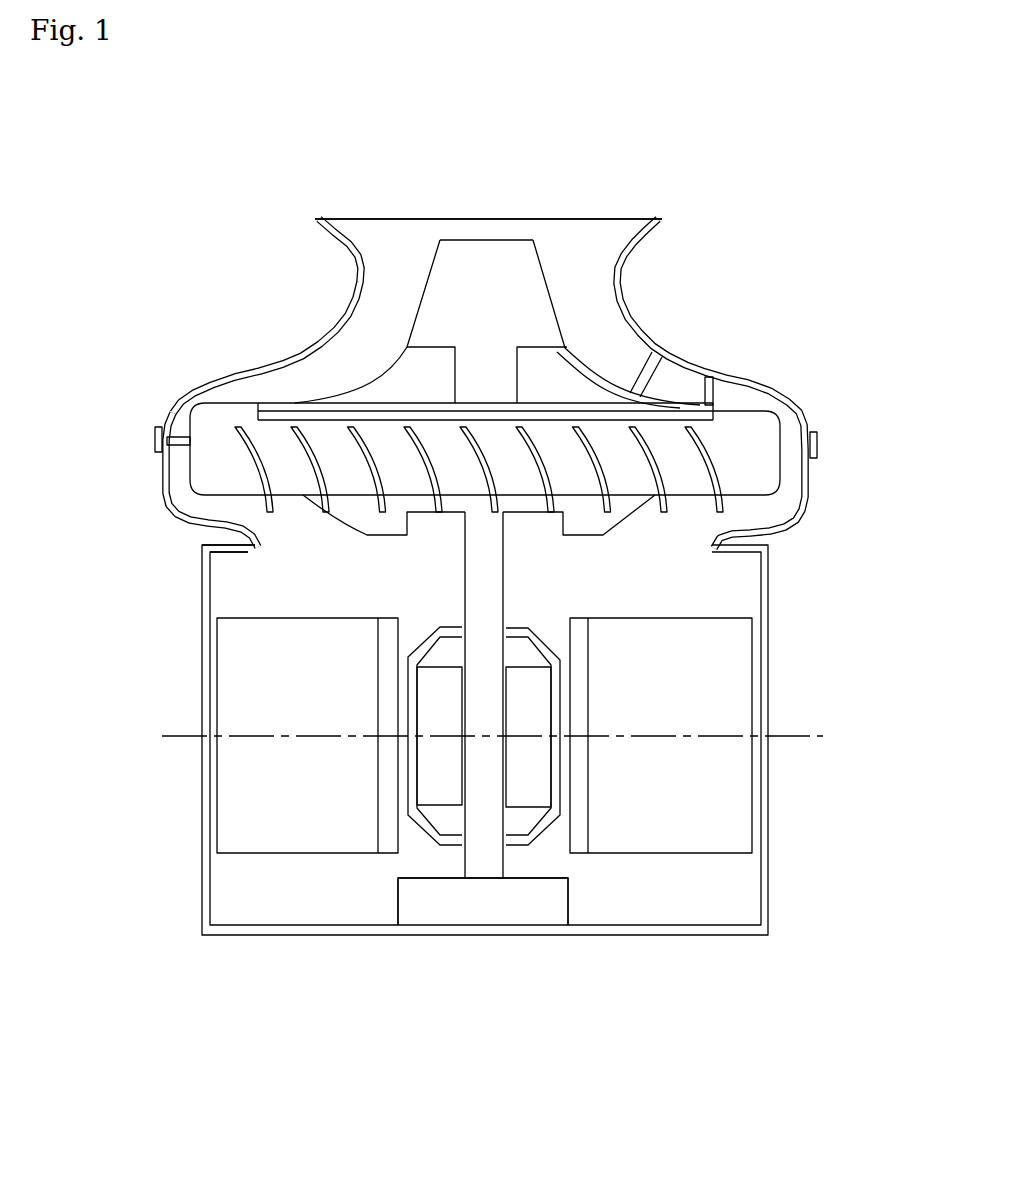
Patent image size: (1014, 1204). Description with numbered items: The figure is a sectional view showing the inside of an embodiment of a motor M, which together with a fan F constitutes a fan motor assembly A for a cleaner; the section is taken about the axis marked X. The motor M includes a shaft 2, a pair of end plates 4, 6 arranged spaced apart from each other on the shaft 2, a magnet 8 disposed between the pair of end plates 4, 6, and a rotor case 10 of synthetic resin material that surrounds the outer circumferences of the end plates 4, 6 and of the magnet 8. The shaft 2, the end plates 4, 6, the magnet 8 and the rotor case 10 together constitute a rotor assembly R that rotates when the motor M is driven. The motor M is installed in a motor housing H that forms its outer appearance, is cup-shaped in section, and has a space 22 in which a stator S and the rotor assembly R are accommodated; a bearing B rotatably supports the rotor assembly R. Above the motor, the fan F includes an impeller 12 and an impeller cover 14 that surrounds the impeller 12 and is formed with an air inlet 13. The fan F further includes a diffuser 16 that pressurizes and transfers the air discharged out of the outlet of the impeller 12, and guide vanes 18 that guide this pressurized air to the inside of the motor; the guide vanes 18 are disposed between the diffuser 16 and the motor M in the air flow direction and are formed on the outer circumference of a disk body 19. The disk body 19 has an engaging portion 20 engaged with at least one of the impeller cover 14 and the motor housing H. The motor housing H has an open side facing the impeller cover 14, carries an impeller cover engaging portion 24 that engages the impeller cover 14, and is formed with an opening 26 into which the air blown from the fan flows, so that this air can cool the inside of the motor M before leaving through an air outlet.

The shaft 2 is at (488, 860).
The end plate 4 is at (448, 841).
The end plate 6 is at (517, 637).
The magnet 8 is at (523, 765).
The rotor case 10 is at (553, 797).
The impeller 12 is at (540, 322).
The air inlet 13 is at (611, 222).
The impeller cover 14 is at (180, 392).
The diffuser 16 is at (710, 378).
The guide vanes 18 is at (713, 468).
The disk body 19 is at (697, 442).
The engaging portion 20 is at (178, 440).
The space 22 is at (553, 863).
The impeller cover engaging portion 24 is at (162, 500).
The opening 26 is at (310, 540).
The fan motor assembly A is at (700, 168).
The bearing B is at (550, 905).
The fan F is at (262, 244).
The motor housing H is at (768, 935).
The motor M is at (206, 958).
The rotor assembly R is at (428, 848).
The stator S is at (272, 866).
The rotation axis X is at (823, 735).